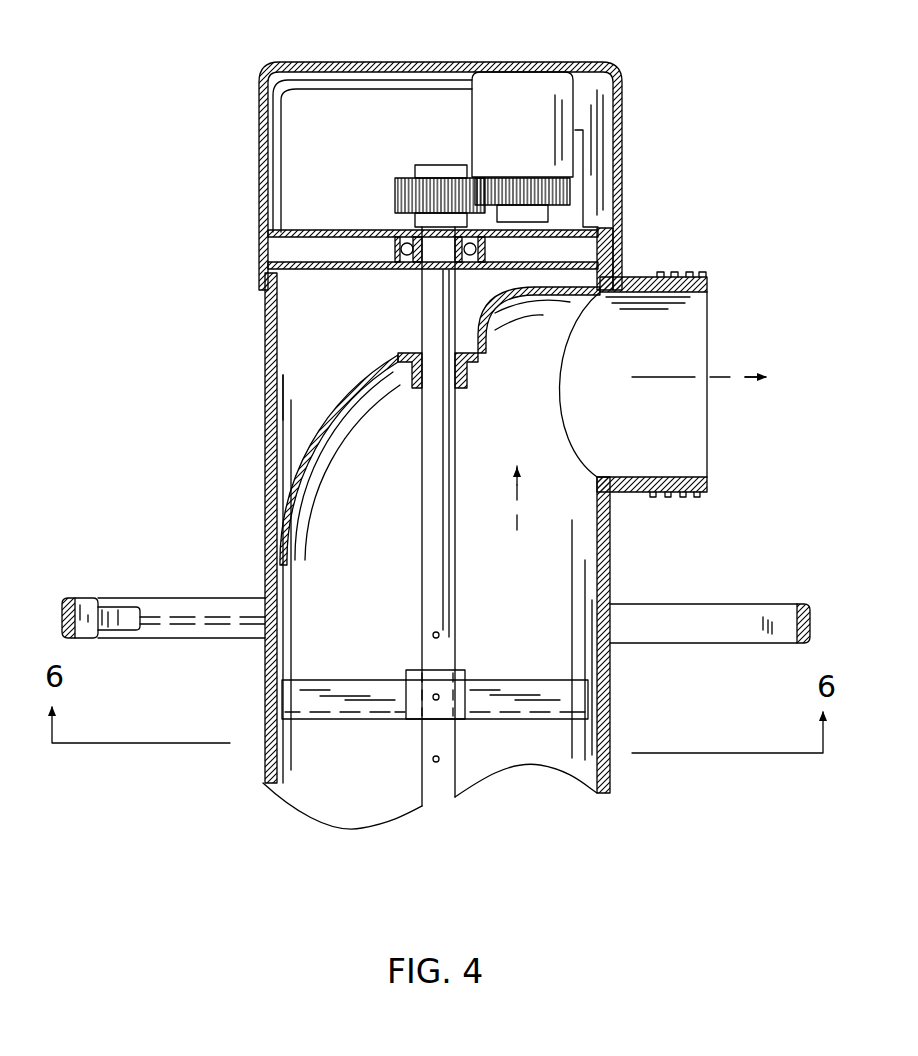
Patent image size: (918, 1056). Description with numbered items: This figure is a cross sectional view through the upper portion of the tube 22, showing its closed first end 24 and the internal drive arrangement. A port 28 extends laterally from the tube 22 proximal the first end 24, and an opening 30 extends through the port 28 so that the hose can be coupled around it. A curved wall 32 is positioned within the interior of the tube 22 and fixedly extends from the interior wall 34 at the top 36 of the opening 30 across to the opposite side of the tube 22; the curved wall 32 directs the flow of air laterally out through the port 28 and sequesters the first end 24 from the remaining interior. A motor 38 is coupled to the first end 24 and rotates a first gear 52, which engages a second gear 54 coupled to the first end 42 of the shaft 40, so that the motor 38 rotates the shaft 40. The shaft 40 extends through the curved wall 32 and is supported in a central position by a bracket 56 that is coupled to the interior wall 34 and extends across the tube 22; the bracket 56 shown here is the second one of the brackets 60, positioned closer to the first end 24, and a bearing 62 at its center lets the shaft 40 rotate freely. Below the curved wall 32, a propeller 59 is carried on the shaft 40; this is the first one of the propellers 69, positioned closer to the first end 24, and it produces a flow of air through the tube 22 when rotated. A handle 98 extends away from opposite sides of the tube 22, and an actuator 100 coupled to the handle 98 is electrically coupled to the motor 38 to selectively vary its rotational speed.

The tube 22 is at (243, 127).
The first end 24 is at (263, 90).
The port 28 is at (703, 278).
The opening 30 is at (725, 318).
The curved wall 32 is at (327, 425).
The interior wall 34 is at (292, 382).
The top 36 is at (600, 300).
The motor 38 is at (473, 177).
The shaft 40 is at (396, 592).
The first end 42 is at (442, 165).
The first gear 52 is at (568, 192).
The second gear 54 is at (395, 190).
The bracket 56 is at (346, 280).
The propeller 59 is at (531, 671).
The second one of the brackets 60 is at (617, 233).
The bearing 62 is at (470, 230).
The first one of the propellers 69 is at (323, 677).
The handle 98 is at (62, 617).
The actuator 100 is at (125, 607).